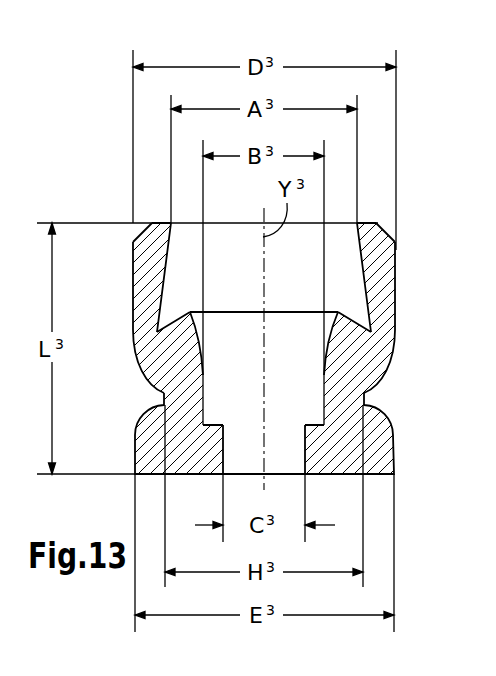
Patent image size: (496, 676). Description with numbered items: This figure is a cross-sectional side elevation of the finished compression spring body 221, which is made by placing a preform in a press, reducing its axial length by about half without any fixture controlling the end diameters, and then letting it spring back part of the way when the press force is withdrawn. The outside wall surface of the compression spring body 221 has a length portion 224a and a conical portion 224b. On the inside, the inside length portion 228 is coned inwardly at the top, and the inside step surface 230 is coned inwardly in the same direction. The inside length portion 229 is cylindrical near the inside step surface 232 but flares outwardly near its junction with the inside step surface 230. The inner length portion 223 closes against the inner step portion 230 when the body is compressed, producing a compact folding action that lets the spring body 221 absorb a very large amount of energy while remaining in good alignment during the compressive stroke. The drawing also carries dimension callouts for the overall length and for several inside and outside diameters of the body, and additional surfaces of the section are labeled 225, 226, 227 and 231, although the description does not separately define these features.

The compression spring body 221 is at (423, 210).
The inner length portion 223 is at (366, 276).
The length portion of outside wall surface 224a is at (397, 297).
The conical portion of outside wall surface 224b is at (383, 381).
The chamfered top surface 225 is at (382, 252).
The flange 226 is at (375, 450).
The rounded shoulder 227 is at (390, 423).
The inside length portion 228 is at (167, 277).
The inside length portion 229 is at (203, 405).
The inside step surface 230 is at (168, 325).
The bore wall 231 is at (223, 457).
The inside step surface 232 is at (313, 425).